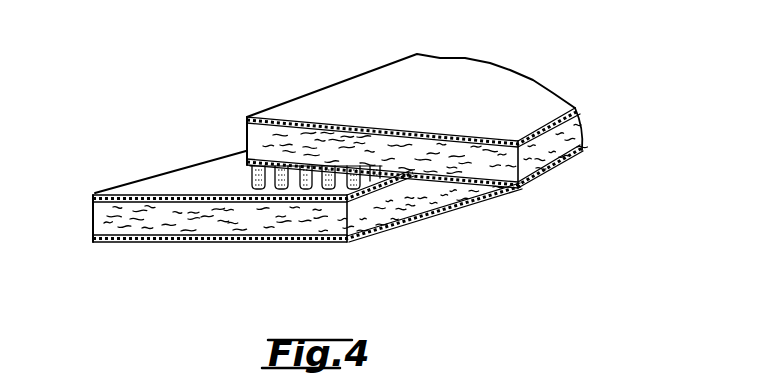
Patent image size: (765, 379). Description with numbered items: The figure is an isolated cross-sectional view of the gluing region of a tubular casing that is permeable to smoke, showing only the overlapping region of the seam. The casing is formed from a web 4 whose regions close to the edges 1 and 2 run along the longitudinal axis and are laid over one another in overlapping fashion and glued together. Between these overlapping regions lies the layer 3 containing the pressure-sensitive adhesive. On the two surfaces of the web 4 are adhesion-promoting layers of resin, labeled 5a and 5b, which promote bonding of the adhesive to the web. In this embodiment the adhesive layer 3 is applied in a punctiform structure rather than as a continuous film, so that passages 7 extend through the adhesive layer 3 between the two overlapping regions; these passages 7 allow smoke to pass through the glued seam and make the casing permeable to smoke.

The edge 1 is at (243, 131).
The edge 2 is at (364, 219).
The adhesive layer 3 is at (243, 168).
The web 4 is at (91, 219).
The adhesion-promoting layer of resin 5a is at (153, 192).
The adhesion-promoting layer of resin 5b is at (165, 243).
The passages 7 is at (254, 186).